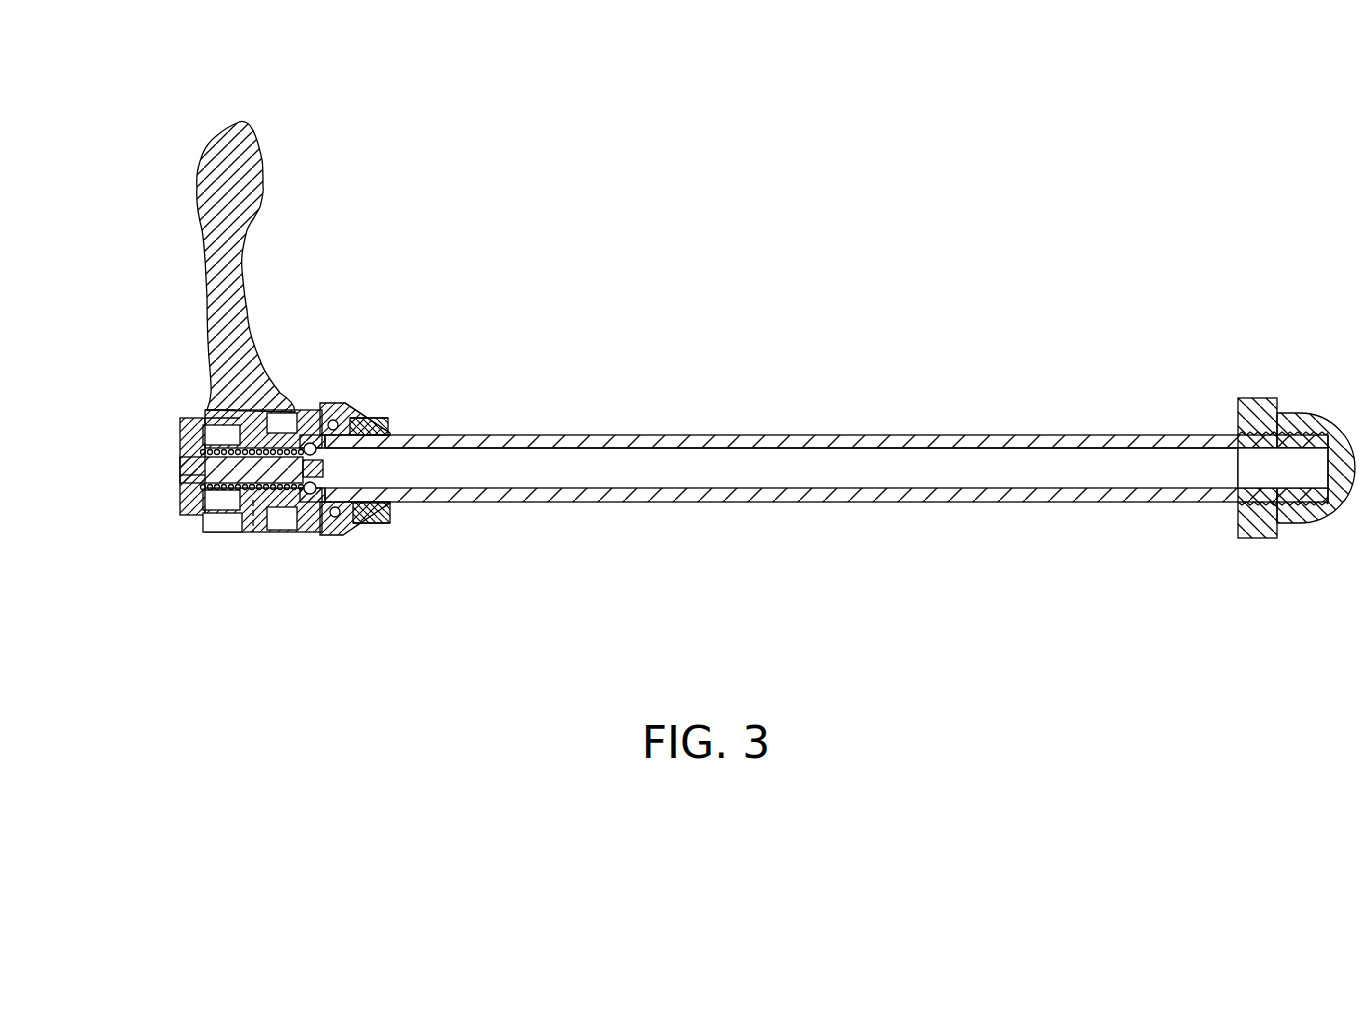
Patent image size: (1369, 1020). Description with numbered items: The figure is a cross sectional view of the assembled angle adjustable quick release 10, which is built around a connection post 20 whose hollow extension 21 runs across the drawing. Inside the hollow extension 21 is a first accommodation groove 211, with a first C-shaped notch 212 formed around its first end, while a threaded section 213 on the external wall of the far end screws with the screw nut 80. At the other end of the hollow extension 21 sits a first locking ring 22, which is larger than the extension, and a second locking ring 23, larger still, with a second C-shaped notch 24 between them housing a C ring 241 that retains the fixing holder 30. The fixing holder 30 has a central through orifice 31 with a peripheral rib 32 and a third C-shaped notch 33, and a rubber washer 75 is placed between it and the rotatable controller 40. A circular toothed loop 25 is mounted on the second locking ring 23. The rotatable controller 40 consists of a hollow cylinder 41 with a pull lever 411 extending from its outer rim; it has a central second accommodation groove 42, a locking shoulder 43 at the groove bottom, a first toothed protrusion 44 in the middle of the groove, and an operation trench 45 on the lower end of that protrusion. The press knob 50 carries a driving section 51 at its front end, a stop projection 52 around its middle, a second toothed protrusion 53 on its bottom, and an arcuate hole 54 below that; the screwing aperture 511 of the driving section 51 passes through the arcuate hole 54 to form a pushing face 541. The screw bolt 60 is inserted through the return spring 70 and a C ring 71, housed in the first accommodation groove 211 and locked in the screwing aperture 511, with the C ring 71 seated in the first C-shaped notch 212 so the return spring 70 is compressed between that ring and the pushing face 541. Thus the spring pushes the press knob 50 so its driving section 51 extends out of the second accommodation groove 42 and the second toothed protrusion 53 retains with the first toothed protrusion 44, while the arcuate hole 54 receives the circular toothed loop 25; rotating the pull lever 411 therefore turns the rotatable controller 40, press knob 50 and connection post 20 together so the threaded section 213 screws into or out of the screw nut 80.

The angle adjustable quick release 10 is at (806, 519).
The connection post 20 is at (806, 482).
The hollow extension 21 is at (795, 508).
The first accommodation groove 211 is at (487, 450).
The first C-shaped notch 212 is at (302, 438).
The threaded section 213 is at (1260, 448).
The first locking ring 22 is at (375, 523).
The peripheral rib 32 is at (418, 502).
The second locking ring 23 is at (318, 536).
The locking shoulder 43 is at (348, 593).
The second C-shaped notch 24 is at (358, 439).
The C ring 241 is at (336, 410).
The circular toothed loop 25 is at (270, 559).
The fixing holder 30 is at (397, 483).
The through orifice 31 is at (383, 427).
The third C-shaped notch 33 is at (340, 420).
The rotatable controller 40 is at (220, 270).
The hollow cylinder 41 is at (228, 520).
The pull lever 411 is at (258, 193).
The second accommodation groove 42 is at (207, 411).
The first toothed protrusion 44 is at (170, 401).
The operation trench 45 is at (273, 428).
The press knob 50 is at (188, 473).
The driving section 51 is at (129, 477).
The screwing aperture 511 is at (183, 475).
The stop projection 52 is at (205, 530).
The second toothed protrusion 53 is at (262, 581).
The arcuate hole 54 is at (206, 371).
The pushing face 541 is at (207, 430).
The screw bolt 60 is at (322, 467).
The return spring 70 is at (220, 528).
The C ring 71 is at (292, 528).
The rubber washer 75 is at (322, 532).
The screw nut 80 is at (1263, 520).